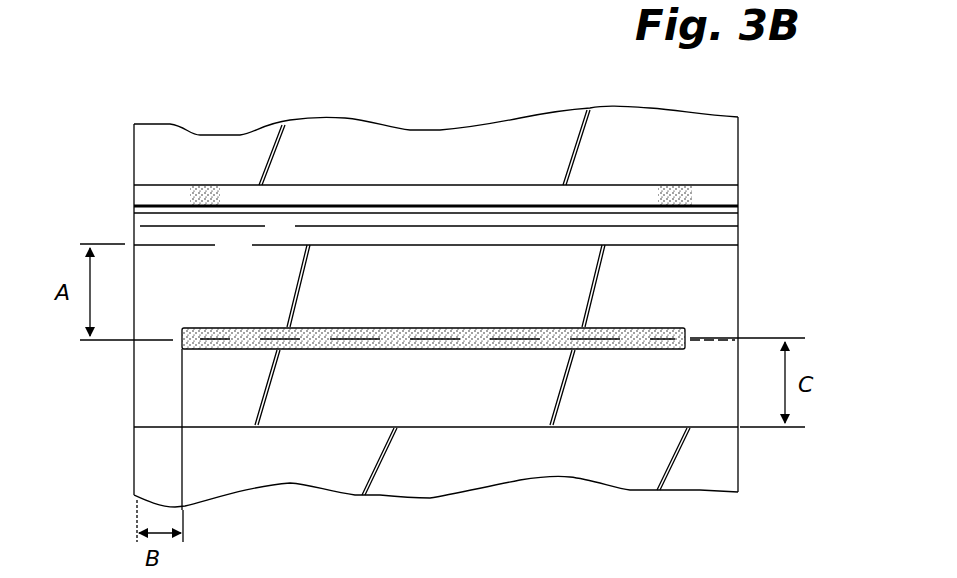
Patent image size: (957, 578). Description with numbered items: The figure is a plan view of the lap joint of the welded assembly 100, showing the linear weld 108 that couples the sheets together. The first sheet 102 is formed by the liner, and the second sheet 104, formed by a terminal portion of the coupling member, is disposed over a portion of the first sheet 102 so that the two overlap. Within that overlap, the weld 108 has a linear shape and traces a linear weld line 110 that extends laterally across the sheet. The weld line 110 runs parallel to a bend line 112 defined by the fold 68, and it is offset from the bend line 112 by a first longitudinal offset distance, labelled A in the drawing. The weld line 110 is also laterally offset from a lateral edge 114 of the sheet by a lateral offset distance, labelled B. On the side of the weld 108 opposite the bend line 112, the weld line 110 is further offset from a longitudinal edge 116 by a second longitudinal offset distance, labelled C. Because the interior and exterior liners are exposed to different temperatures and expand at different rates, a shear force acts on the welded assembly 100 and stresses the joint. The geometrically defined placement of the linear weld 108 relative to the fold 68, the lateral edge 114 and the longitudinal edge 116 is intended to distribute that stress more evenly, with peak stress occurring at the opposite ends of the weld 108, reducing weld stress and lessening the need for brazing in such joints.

The welded assembly 100 is at (147, 100).
The fold 68 is at (745, 208).
The bend line 112 is at (366, 262).
The linear weld 108 is at (509, 328).
The weld line 110 is at (655, 348).
The second sheet 104 is at (460, 398).
The first sheet 102 is at (452, 476).
The lateral edge 114 is at (132, 356).
The longitudinal edge 116 is at (612, 430).